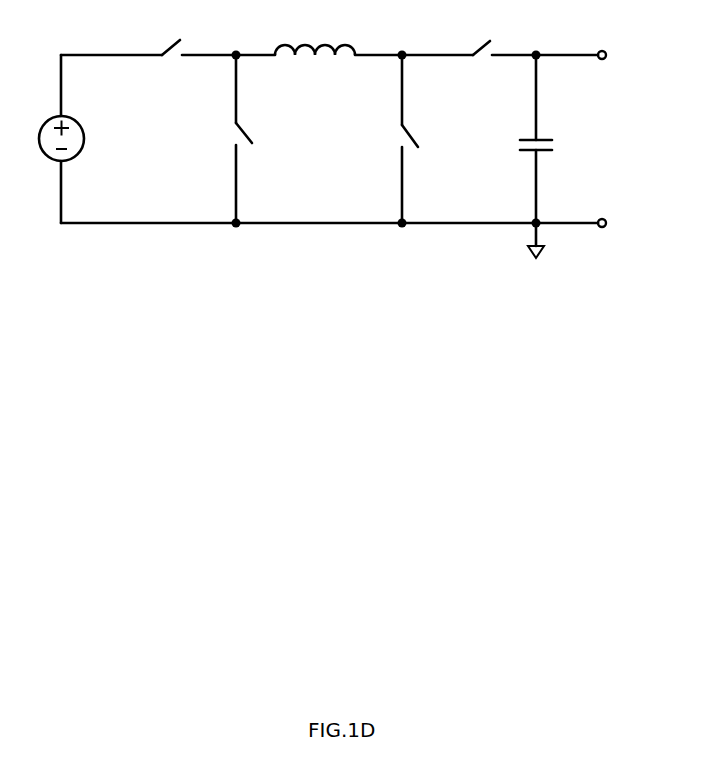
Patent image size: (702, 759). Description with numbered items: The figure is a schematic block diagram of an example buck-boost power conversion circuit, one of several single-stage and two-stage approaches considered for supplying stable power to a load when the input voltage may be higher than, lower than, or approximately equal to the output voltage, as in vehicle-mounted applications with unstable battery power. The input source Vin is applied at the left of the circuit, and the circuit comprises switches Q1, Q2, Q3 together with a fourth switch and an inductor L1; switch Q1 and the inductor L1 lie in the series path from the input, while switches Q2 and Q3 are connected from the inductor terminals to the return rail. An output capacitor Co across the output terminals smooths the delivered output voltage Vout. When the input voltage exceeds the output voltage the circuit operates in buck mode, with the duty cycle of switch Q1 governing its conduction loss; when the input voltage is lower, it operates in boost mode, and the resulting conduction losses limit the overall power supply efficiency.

The input voltage source Vin is at (75, 138).
The switch Q1 is at (177, 34).
The switch Q2 is at (226, 139).
The inductor L1 is at (315, 35).
The switch Q3 is at (388, 139).
The output capacitor Co is at (551, 139).
The output voltage Vout is at (629, 140).